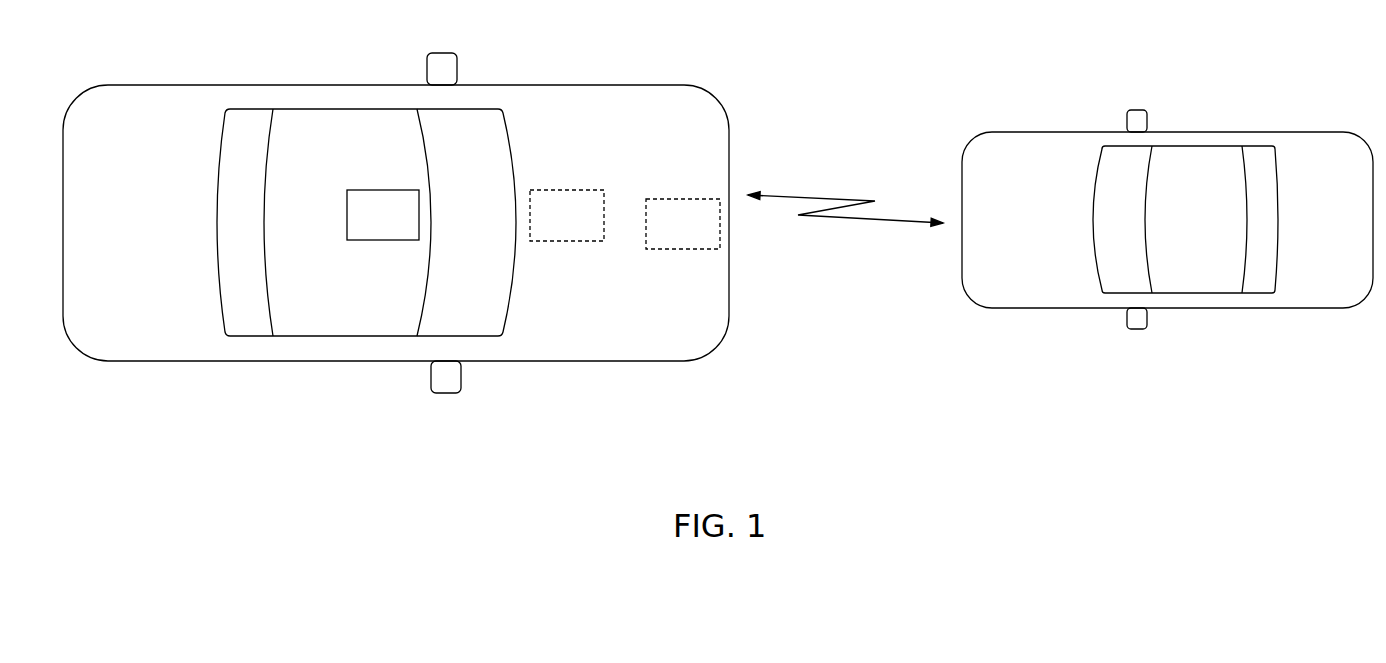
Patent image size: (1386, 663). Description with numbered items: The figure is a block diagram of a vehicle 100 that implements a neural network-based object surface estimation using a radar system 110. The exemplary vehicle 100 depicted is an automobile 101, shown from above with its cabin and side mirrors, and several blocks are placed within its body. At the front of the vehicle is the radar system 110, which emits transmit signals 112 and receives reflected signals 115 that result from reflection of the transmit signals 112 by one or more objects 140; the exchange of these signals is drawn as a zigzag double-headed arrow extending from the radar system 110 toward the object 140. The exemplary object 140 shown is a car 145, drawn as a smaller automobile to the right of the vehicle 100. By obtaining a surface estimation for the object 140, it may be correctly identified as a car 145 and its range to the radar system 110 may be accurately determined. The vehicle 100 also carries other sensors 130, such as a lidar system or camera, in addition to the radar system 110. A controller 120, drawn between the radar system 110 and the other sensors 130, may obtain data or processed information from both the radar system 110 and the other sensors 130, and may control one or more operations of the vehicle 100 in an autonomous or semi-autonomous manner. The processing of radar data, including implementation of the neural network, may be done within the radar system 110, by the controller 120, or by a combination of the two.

The vehicle 100 is at (142, 361).
The automobile 101 is at (396, 246).
The radar system 110 is at (706, 237).
The transmit signals 112 is at (845, 187).
The reflected signals 115 is at (845, 187).
The controller 120 is at (590, 228).
The other sensors 130 is at (406, 228).
The object 140 is at (1020, 131).
The car 145 is at (1167, 198).